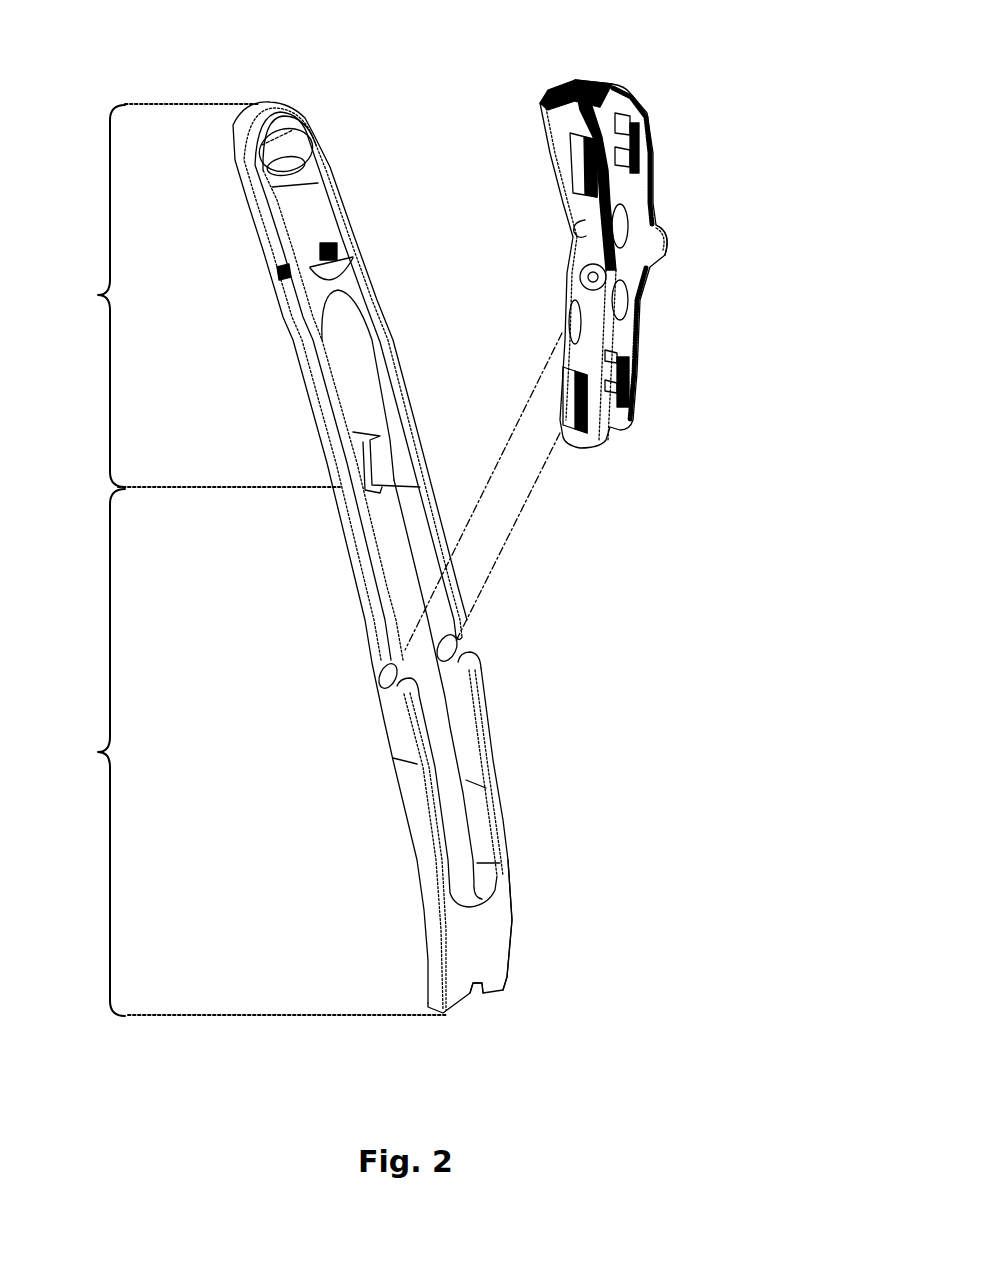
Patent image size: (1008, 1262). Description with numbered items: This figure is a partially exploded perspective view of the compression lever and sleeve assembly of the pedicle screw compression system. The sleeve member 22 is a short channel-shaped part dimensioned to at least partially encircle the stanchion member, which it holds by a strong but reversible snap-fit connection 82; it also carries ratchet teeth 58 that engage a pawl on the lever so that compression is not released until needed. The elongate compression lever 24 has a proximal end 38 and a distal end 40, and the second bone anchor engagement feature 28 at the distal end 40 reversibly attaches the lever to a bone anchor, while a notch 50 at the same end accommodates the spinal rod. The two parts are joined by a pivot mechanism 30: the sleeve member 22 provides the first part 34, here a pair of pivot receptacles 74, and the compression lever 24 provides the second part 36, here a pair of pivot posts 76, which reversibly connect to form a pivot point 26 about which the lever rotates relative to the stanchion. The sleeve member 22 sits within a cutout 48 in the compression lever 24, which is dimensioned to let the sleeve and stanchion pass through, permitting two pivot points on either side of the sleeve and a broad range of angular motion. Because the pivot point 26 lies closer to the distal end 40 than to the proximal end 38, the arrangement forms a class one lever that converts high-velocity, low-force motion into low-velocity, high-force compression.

The sleeve member 22 is at (655, 418).
The compression lever 24 is at (372, 557).
The pivot point 26 is at (483, 722).
The second bone anchor engagement feature 28 is at (508, 962).
The pivot mechanism 30 is at (358, 660).
The first part of pivot mechanism 34 is at (668, 243).
The second part of pivot mechanism 36 is at (470, 639).
The proximal end 38 is at (201, 295).
The distal end 40 is at (254, 752).
The cutout 48 is at (452, 796).
The notch 50 is at (475, 992).
The ratchet teeth 58 is at (576, 86).
The pivot receptacle 74 is at (385, 673).
The pivot post 76 is at (660, 239).
The snap-fit connection 82 is at (636, 140).